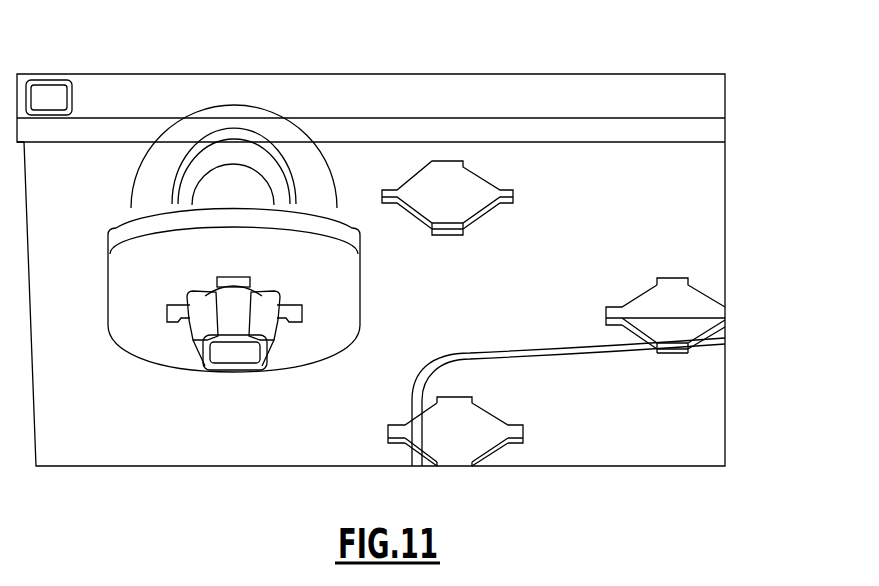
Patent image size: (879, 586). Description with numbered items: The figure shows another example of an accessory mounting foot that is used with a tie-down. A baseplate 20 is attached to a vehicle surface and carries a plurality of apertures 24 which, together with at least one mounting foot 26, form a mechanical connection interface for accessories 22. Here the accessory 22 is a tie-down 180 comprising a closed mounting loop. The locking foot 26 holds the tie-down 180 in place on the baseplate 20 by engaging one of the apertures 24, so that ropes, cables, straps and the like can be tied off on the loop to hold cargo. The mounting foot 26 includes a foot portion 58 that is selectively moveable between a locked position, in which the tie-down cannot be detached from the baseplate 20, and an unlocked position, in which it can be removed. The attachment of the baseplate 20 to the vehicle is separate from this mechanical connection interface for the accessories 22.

The baseplate 20 is at (678, 254).
The accessory 22 is at (180, 160).
The aperture 24 is at (423, 190).
The mounting foot 26 is at (227, 370).
The foot portion 58 is at (226, 318).
The tie-down 180 is at (207, 117).